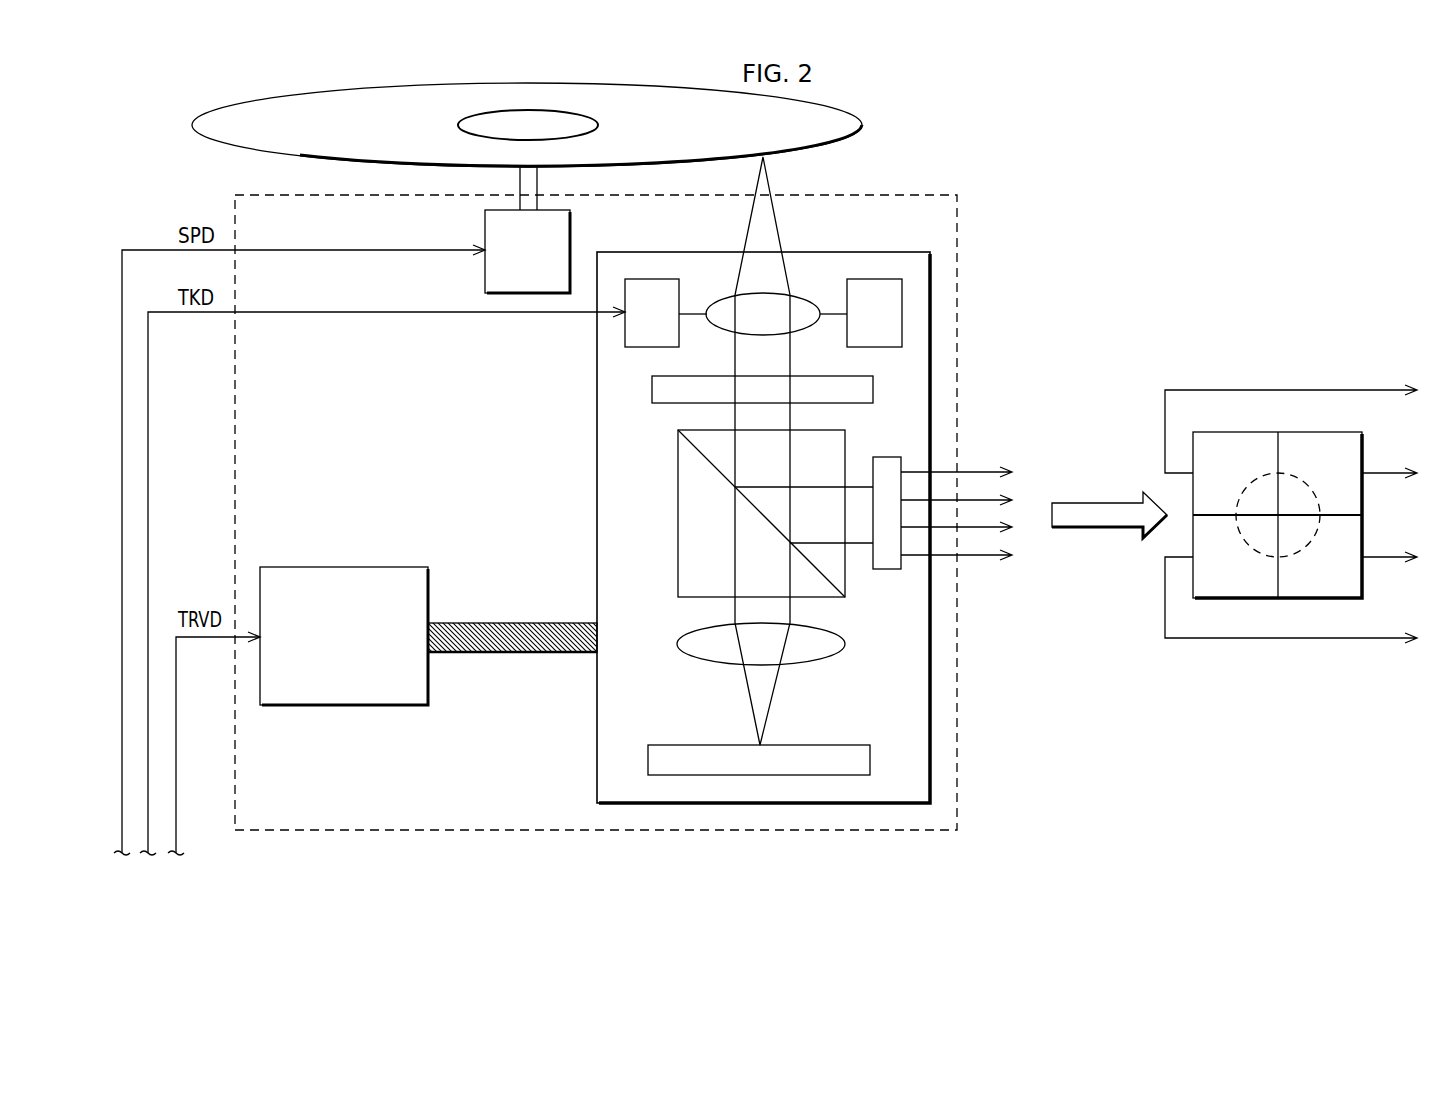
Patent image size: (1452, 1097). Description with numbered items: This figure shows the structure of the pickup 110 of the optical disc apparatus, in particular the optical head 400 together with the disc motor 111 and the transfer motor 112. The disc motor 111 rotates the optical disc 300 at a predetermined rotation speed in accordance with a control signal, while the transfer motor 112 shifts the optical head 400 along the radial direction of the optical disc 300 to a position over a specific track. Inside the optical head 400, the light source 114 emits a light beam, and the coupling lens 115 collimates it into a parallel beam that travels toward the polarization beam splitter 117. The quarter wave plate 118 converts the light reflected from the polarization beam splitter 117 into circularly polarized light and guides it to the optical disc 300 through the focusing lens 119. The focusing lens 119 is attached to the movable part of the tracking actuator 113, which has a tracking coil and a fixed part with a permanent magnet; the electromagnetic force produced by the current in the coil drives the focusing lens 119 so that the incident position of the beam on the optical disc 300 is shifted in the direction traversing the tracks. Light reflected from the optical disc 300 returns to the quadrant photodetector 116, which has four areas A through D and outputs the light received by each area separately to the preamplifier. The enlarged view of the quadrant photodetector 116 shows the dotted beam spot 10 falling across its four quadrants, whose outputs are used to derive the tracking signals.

The optical disc 300 is at (847, 110).
The pickup 110 is at (957, 238).
The disc motor 111 is at (485, 223).
The optical head 400 is at (930, 303).
The transfer motor 112 is at (313, 705).
The tracking actuator 113 is at (622, 347).
The focusing lens 119 is at (803, 293).
The quarter wave plate 118 is at (873, 377).
The polarization beam splitter 117 is at (678, 460).
The coupling lens 115 is at (677, 644).
The light source 114 is at (870, 748).
The quadrant photodetector 116 is at (885, 569).
The beam spot 10 is at (1293, 473).